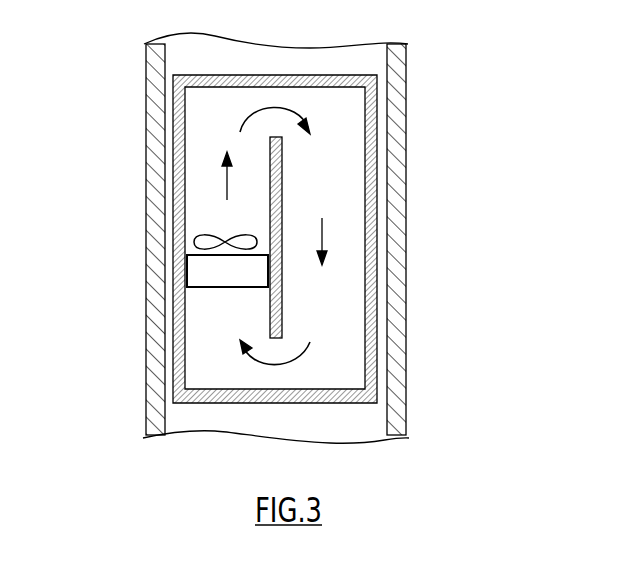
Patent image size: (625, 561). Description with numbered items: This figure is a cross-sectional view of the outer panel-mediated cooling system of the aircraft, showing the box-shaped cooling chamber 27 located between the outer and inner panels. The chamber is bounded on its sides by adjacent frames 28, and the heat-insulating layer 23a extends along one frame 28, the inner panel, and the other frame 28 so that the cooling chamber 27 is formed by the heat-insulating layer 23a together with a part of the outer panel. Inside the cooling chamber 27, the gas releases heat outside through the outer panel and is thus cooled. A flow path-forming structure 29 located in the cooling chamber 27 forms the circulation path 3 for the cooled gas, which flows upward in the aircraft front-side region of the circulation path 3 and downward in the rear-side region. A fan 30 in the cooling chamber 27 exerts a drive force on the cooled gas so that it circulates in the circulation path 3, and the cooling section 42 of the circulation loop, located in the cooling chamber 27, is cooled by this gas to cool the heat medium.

The frame 28 is at (146, 145).
The heat-insulating layer 23a is at (377, 222).
The cooling chamber 27 is at (344, 178).
The flow path-forming structure 29 is at (282, 303).
The circulation path 3 is at (222, 181).
The fan 30 is at (193, 243).
The cooling section 42 is at (187, 272).